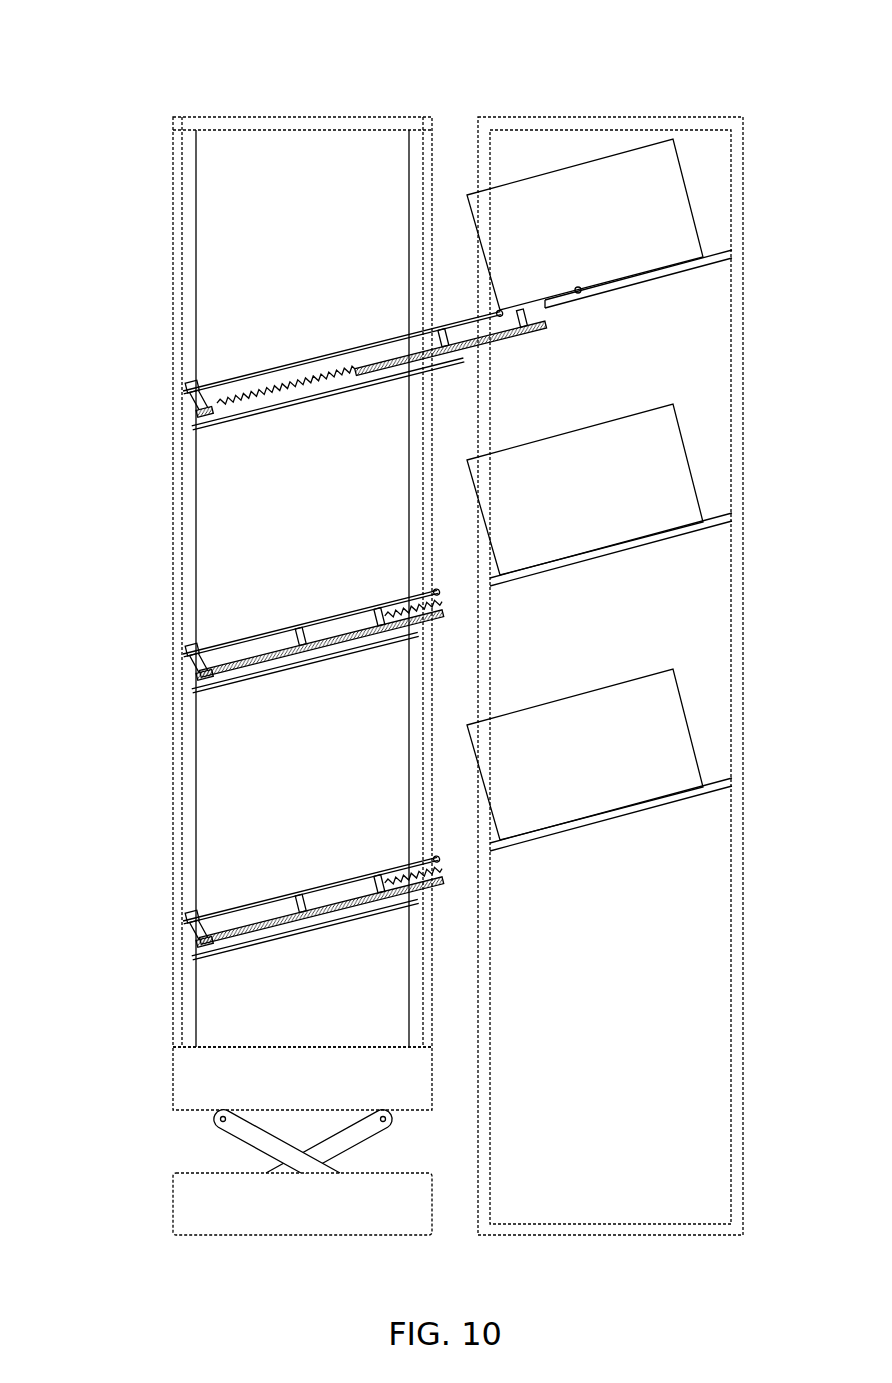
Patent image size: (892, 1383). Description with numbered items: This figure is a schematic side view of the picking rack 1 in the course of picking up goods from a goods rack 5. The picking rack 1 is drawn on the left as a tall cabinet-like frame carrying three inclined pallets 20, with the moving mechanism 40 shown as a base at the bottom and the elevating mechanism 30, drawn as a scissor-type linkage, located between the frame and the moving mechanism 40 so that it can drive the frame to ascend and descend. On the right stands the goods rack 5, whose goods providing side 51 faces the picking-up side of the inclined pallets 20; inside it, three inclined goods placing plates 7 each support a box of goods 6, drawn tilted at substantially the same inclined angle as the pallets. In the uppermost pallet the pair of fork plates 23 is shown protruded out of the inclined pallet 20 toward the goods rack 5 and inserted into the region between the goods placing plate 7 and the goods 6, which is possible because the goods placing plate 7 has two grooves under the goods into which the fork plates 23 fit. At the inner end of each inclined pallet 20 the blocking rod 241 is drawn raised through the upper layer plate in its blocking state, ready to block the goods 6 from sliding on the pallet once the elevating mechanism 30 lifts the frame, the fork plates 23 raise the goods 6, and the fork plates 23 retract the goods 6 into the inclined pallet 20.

The picking rack 1 is at (186, 92).
The goods rack 5 is at (740, 93).
The goods providing side 51 is at (478, 135).
The goods 6 is at (673, 205).
The goods placing plate 7 is at (695, 263).
The inclined pallet 20 is at (448, 622).
The fork plates 23 is at (557, 300).
The blocking rod 241 is at (190, 388).
The elevating mechanism 30 is at (183, 1156).
The moving mechanism 40 is at (173, 1203).